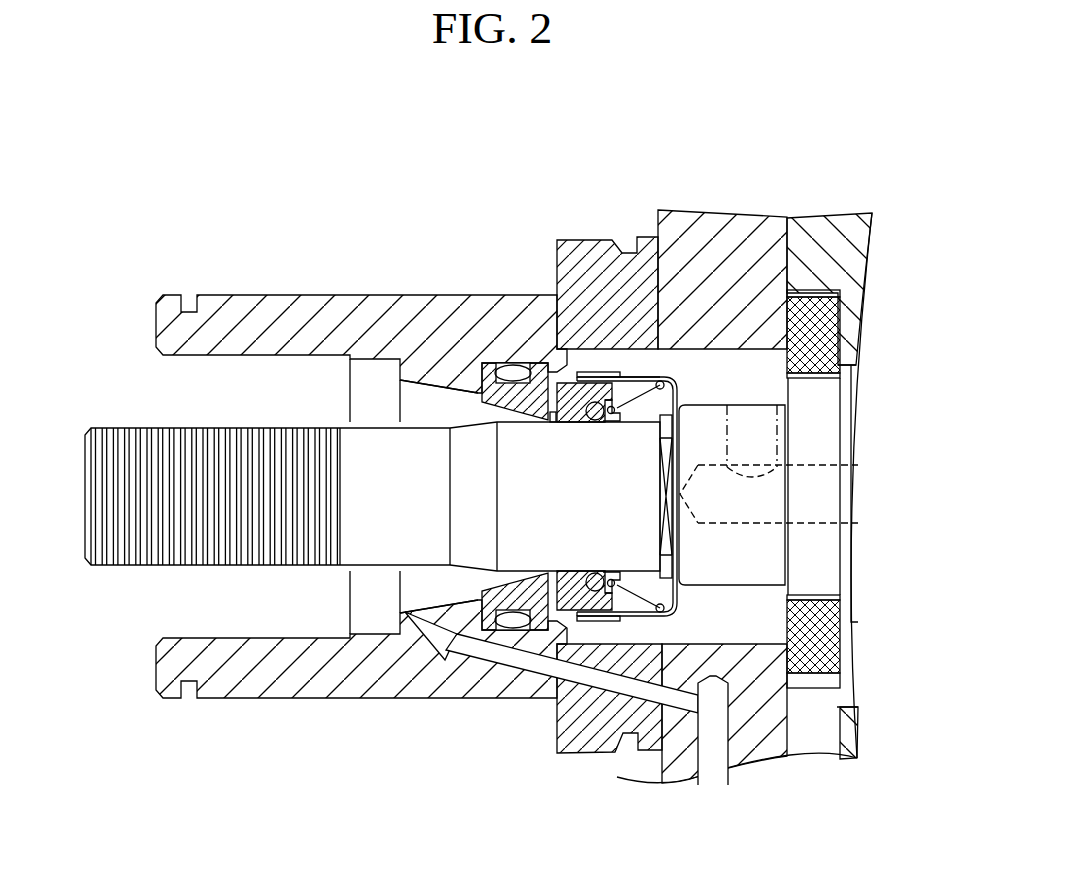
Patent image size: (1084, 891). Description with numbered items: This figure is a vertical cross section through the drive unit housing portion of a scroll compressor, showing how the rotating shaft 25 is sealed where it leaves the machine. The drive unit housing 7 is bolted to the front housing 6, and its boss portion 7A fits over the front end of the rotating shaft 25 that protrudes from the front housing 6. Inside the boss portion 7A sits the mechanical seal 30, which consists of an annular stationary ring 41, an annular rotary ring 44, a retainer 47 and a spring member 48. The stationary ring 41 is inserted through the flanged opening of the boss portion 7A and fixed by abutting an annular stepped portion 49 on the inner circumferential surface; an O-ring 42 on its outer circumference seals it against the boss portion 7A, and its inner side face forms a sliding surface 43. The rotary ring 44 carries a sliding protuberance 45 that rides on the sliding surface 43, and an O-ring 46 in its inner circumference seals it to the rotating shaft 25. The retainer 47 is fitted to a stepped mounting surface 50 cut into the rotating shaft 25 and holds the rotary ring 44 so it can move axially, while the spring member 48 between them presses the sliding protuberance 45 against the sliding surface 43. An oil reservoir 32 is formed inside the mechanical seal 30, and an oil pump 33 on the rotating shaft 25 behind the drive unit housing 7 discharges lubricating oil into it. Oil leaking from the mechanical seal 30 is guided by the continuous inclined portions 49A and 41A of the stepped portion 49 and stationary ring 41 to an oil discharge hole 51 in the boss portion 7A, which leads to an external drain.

The front housing 6 is at (823, 233).
The drive unit housing 7 is at (724, 235).
The boss portion 7A is at (312, 303).
The rotating shaft 25 is at (368, 470).
The mechanical seal 30 is at (637, 352).
The oil reservoir 32 is at (737, 607).
The oil pump 33 is at (845, 633).
The annular stationary ring 41 is at (492, 388).
The inclined portion 41A is at (520, 590).
The O-ring 42 is at (513, 372).
The sliding surface 43 is at (567, 355).
The annular rotary ring 44 is at (598, 386).
The sliding protuberance 45 is at (553, 422).
The O-ring 46 is at (596, 418).
The retainer 47 is at (688, 379).
The spring member 48 is at (645, 385).
The annular stepped portion 49 is at (440, 378).
The inclined portion 49A is at (442, 600).
The stepped mounting surface 50 is at (660, 508).
The oil discharge hole 51 is at (522, 665).